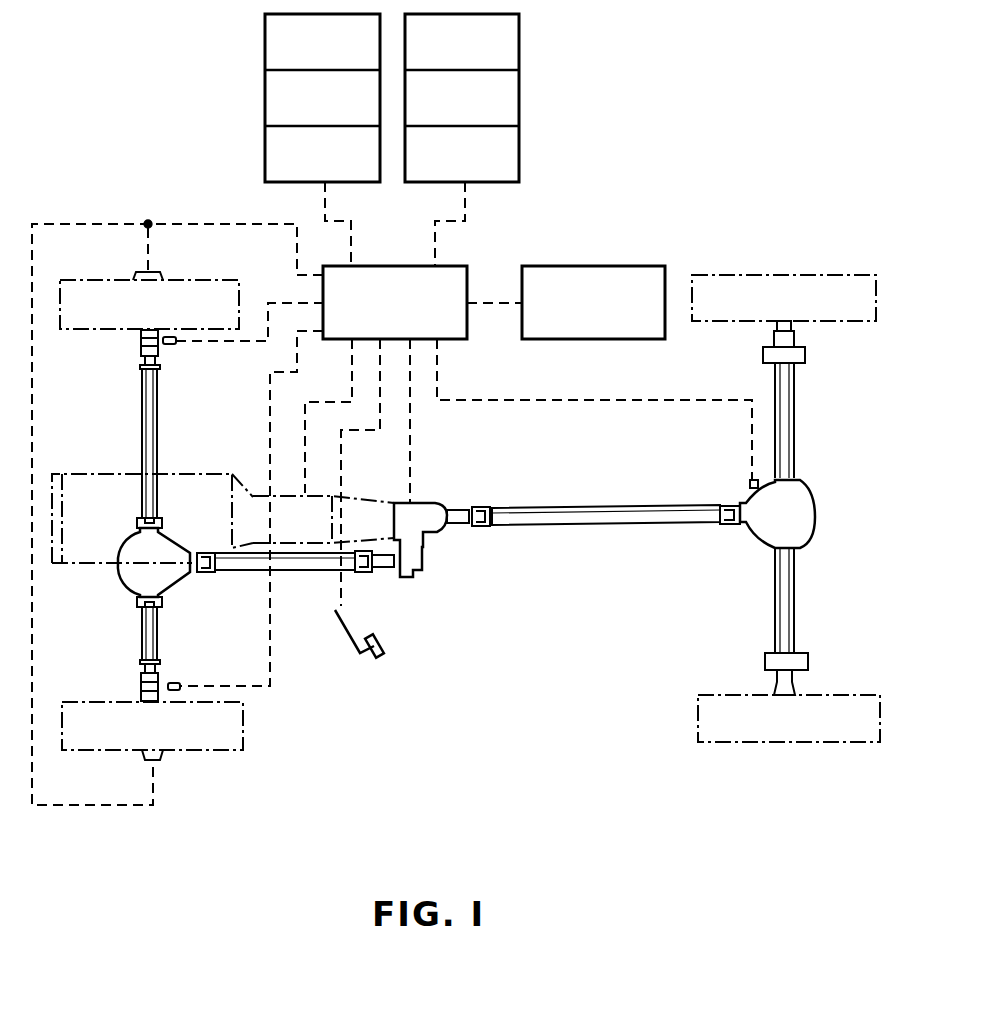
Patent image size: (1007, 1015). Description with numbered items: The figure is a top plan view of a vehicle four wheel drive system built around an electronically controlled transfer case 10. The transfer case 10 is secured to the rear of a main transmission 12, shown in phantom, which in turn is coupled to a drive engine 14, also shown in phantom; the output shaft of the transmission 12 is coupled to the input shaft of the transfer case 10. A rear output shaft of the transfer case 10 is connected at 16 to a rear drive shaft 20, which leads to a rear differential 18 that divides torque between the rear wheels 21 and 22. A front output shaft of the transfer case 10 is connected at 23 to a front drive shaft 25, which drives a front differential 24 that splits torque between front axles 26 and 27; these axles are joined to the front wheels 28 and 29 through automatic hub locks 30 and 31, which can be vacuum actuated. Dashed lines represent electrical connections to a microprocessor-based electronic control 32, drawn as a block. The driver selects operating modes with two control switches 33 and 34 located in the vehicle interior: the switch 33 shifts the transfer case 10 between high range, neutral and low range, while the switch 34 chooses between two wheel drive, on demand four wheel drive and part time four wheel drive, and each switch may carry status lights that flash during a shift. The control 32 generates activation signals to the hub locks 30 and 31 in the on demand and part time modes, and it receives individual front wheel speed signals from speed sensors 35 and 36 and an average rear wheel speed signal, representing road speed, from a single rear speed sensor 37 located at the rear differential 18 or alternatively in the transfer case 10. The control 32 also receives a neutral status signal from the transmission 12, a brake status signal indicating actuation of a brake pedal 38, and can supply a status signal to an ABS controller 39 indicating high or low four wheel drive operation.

The transfer case 10 is at (436, 504).
The main transmission 12 is at (278, 492).
The drive engine 14 is at (178, 472).
The connection of rear output shaft to rear drive shaft 16 is at (484, 528).
The rear differential 18 is at (808, 537).
The rear drive shaft 20 is at (595, 508).
The rear wheel 21 is at (781, 274).
The rear wheel 22 is at (718, 746).
The connection of front output shaft to front drive shaft 23 is at (374, 573).
The front differential 24 is at (126, 574).
The front drive shaft 25 is at (300, 572).
The front axle 26 is at (141, 426).
The front axle 27 is at (140, 636).
The front wheel 28 is at (92, 331).
The front wheel 29 is at (244, 742).
The automatic hub lock 30 is at (160, 274).
The automatic hub lock 31 is at (161, 762).
The electronic control 32 is at (470, 272).
The control switch 33 is at (265, 103).
The control switch 34 is at (519, 105).
The speed sensor 35 is at (172, 345).
The speed sensor 36 is at (178, 684).
The rear speed sensor 37 is at (750, 484).
The brake pedal 38 is at (388, 648).
The ABS controller 39 is at (632, 266).